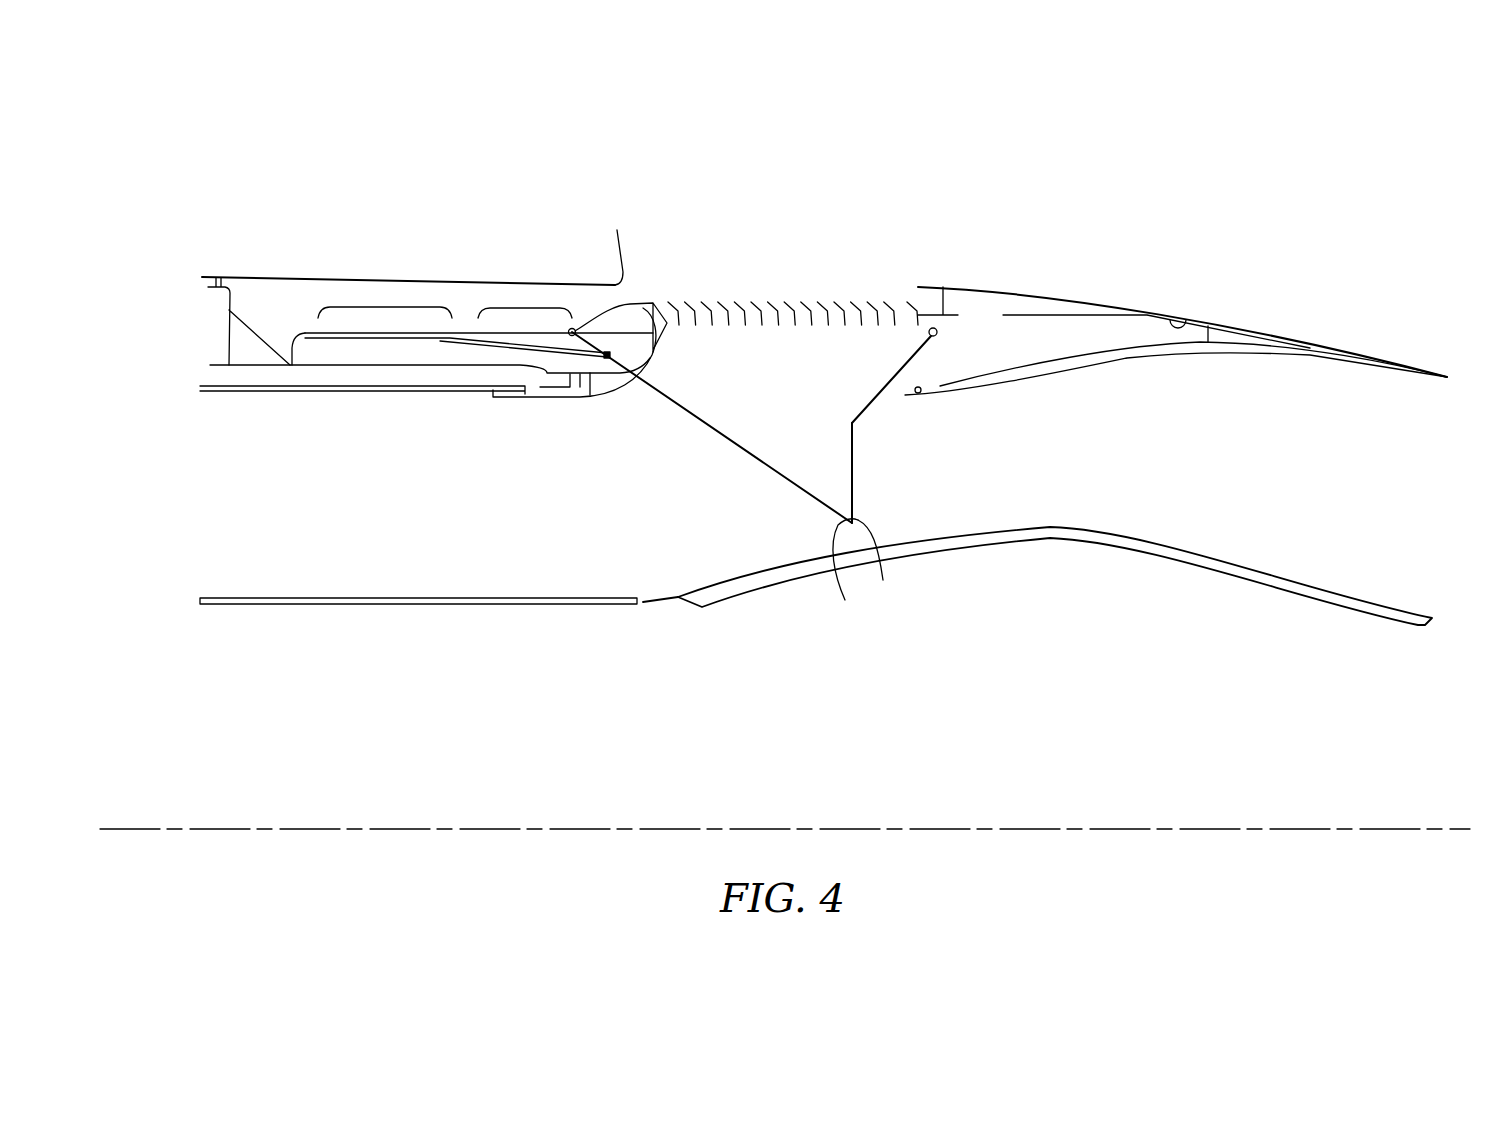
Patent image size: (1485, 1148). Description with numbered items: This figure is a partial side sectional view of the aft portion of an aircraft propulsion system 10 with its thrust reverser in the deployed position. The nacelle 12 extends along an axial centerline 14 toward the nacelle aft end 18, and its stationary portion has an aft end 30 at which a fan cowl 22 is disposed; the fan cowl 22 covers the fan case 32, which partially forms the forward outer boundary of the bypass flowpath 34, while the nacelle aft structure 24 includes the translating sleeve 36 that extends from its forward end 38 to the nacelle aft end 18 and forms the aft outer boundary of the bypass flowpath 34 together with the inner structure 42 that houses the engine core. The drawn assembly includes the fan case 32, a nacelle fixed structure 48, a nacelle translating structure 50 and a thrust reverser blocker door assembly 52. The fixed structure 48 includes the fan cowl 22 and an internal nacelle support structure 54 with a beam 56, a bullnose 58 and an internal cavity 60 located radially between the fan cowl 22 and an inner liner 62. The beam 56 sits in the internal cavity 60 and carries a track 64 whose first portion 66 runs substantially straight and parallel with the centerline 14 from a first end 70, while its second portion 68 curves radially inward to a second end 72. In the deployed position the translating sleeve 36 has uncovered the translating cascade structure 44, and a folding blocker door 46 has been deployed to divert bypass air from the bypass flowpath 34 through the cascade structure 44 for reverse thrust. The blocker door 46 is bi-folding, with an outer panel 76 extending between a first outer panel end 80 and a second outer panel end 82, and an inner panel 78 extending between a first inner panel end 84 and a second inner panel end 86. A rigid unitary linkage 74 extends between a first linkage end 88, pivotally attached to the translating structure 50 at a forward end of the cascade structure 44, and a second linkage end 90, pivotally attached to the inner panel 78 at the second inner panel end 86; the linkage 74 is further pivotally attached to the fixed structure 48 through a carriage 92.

The aircraft propulsion system 10 is at (235, 160).
The nacelle 12 is at (324, 202).
The axial centerline 14 is at (1427, 828).
The nacelle aft end 18 is at (1448, 377).
The fan cowl 22 is at (407, 282).
The nacelle aft structure 24 is at (1106, 301).
The aft end of stationary portion of the nacelle 30 is at (616, 243).
The fan case 32 is at (240, 394).
The bypass flowpath 34 is at (448, 537).
The translating sleeve 36 is at (1176, 368).
The forward end of translating sleeve 38 is at (918, 287).
The inner structure 42 is at (1266, 573).
The translating cascade structure 44 is at (766, 296).
The blocker door 46 is at (856, 453).
The nacelle fixed structure 48 is at (454, 274).
The nacelle translating structure 50 is at (974, 272).
The thrust reverser blocker door assembly 52 is at (762, 498).
The internal nacelle support structure 54 is at (217, 345).
The beam 56 is at (322, 355).
The bullnose 58 is at (612, 359).
The internal cavity 60 is at (311, 300).
The inner liner 62 is at (385, 368).
The track 64 is at (353, 337).
The first portion of the track 66 is at (388, 307).
The second portion of the track 68 is at (548, 310).
The first end of the track 70 is at (294, 368).
The second end of the track 72 is at (590, 396).
The linkage 74 is at (724, 438).
The outer panel 76 is at (876, 379).
The inner panel 78 is at (868, 490).
The first outer panel end 80 is at (852, 423).
The second outer panel end 82 is at (936, 336).
The first inner panel end 84 is at (853, 425).
The second inner panel end 86 is at (883, 568).
The first linkage end 88 is at (570, 334).
The second linkage end 90 is at (846, 578).
The carriage 92 is at (660, 356).